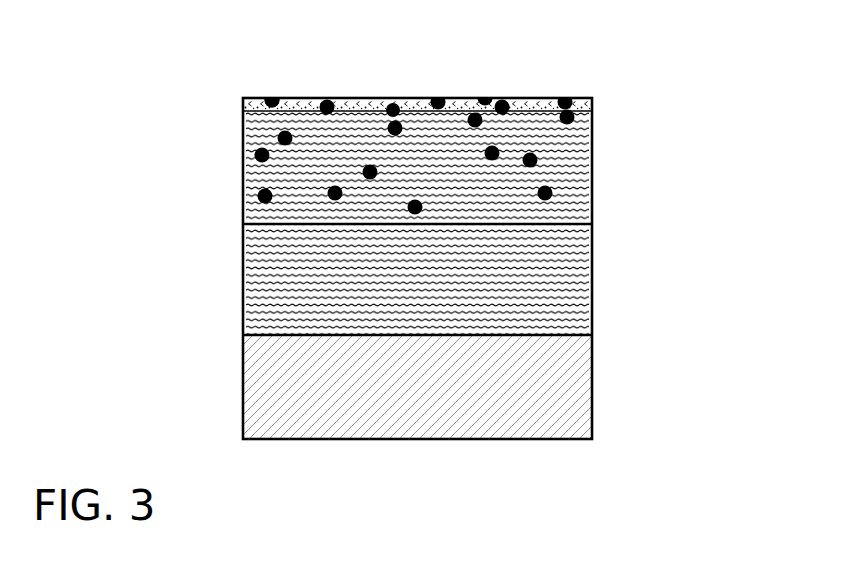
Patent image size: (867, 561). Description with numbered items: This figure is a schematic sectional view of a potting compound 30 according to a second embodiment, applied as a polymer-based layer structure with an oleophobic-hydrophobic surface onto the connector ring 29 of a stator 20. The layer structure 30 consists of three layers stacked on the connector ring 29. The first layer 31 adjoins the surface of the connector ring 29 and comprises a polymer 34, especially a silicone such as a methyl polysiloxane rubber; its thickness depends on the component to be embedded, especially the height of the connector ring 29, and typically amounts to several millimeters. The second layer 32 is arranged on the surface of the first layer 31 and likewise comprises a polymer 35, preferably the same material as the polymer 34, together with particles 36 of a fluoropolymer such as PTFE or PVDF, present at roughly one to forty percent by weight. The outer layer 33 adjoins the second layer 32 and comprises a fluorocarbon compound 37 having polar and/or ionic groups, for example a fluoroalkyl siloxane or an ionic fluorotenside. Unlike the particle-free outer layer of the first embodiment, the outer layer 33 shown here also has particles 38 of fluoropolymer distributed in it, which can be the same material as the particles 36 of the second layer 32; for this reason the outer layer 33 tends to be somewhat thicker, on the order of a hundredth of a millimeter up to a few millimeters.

The stator 20 is at (417, 387).
The connector ring 29 is at (260, 383).
The potting compound 30 is at (723, 75).
The first layer 31 is at (598, 267).
The second layer 32 is at (598, 162).
The outer layer 33 is at (598, 100).
The polymer 34 is at (262, 279).
The polymer 35 is at (250, 135).
The particles 36 is at (262, 196).
The fluorocarbon compound 37 is at (250, 103).
The particles 38 is at (272, 97).